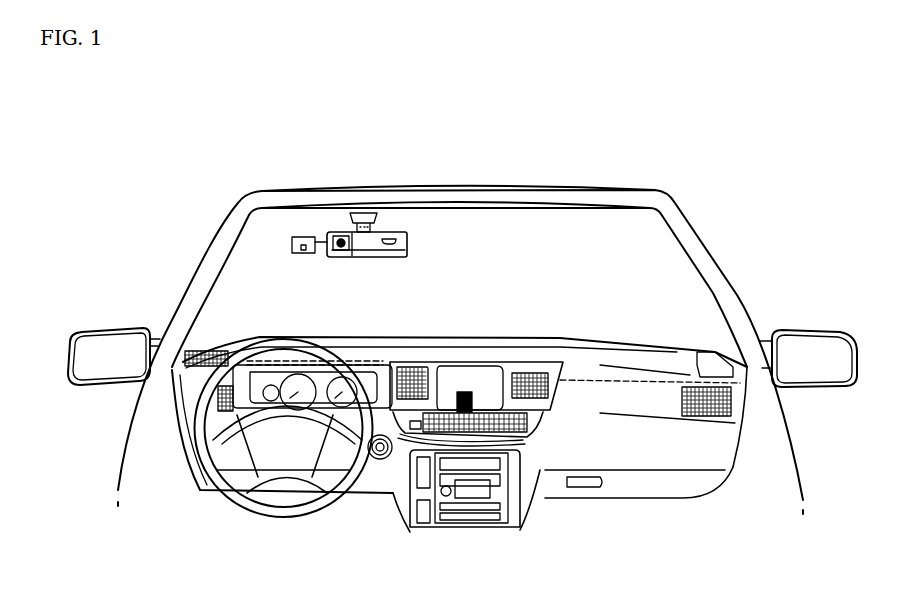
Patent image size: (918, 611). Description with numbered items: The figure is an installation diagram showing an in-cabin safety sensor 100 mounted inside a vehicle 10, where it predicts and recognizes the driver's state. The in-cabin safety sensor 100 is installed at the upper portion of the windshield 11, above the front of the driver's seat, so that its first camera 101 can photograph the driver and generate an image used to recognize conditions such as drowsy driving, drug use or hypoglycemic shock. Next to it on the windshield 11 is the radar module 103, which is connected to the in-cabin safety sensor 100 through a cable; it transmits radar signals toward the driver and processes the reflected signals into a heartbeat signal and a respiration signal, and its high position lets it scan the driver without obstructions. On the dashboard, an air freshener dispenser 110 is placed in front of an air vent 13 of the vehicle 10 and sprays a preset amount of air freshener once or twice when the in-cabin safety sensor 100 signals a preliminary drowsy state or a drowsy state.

The vehicle 10 is at (570, 188).
The windshield 11 is at (608, 228).
The air vent 13 is at (488, 420).
The in-cabin safety sensor 100 is at (402, 178).
The first camera 101 is at (340, 237).
The radar module 103 is at (303, 237).
The air freshener dispenser 110 is at (466, 392).